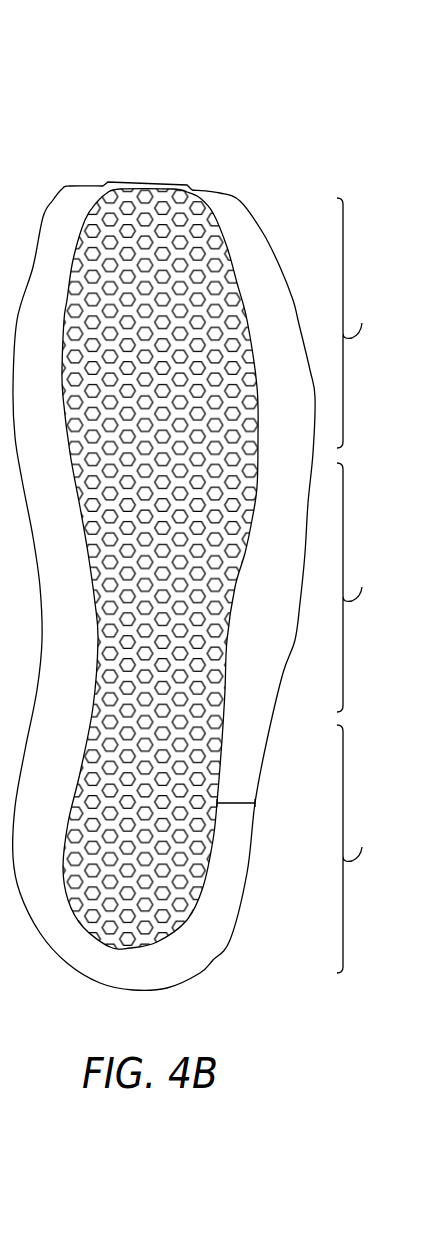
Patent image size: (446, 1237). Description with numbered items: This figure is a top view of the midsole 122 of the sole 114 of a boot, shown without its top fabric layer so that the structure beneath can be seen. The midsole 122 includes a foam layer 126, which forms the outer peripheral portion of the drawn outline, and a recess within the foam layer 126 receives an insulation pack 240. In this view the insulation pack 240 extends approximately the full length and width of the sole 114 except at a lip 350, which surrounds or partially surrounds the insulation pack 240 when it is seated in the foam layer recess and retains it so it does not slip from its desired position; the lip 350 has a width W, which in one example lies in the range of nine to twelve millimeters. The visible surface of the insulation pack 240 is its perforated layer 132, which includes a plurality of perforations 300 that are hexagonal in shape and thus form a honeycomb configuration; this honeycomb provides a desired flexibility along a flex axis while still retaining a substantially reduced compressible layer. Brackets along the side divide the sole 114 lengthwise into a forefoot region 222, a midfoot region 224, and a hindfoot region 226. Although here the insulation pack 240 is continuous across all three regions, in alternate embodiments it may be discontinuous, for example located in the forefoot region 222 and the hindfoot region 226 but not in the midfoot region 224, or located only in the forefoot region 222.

The sole 114 is at (248, 117).
The midsole 122 is at (272, 167).
The foam layer 126 is at (270, 243).
The perforated layer 132 is at (110, 222).
The insulation pack 240 is at (143, 183).
The perforations 300 is at (202, 232).
The lip 350 is at (273, 633).
The width of the lip W is at (231, 803).
The forefoot region 222 is at (360, 323).
The midfoot region 224 is at (361, 587).
The hindfoot region 226 is at (361, 849).